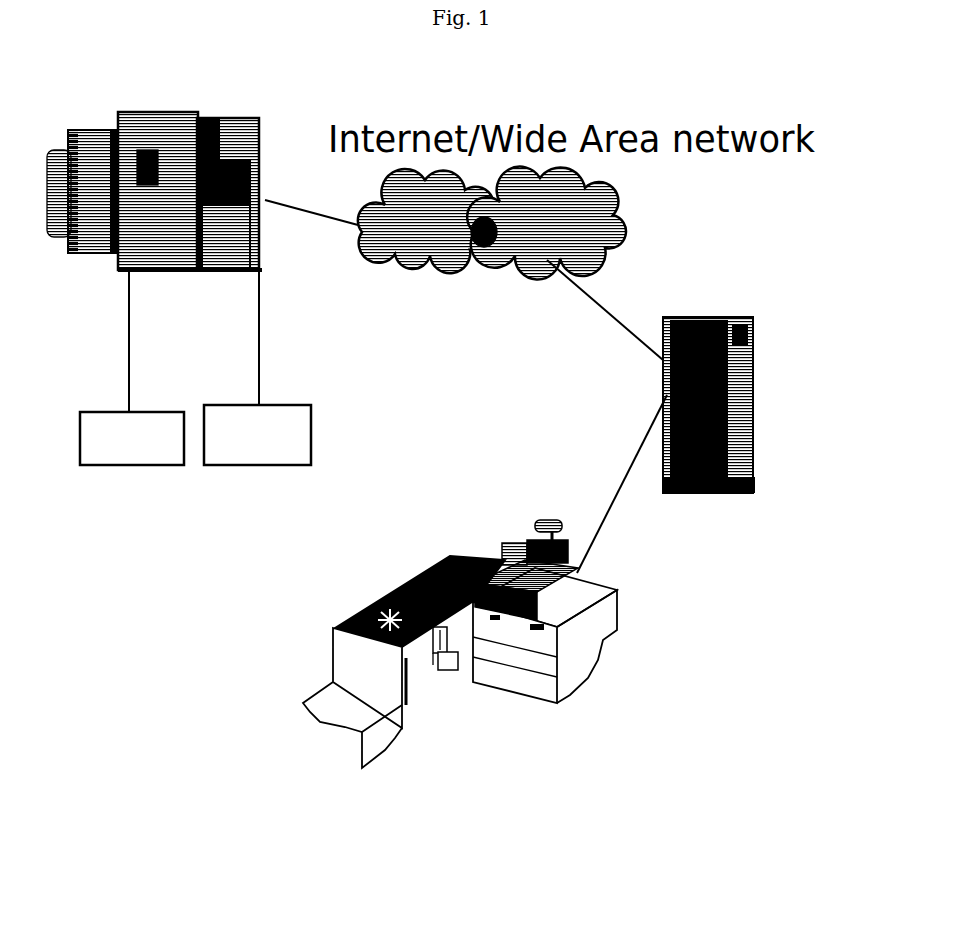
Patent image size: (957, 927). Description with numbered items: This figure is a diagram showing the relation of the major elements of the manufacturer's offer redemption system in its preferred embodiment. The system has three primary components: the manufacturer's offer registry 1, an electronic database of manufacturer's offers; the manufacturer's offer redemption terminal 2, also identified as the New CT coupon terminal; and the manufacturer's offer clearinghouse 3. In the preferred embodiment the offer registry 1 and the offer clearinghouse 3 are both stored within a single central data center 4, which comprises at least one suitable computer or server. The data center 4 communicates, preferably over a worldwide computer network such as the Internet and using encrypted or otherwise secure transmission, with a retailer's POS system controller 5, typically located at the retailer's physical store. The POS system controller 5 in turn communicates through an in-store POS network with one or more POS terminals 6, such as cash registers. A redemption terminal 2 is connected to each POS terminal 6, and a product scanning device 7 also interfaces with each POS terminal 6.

The manufacturer's offer registry 1 is at (98, 467).
The manufacturer's offer redemption terminal 2 is at (442, 670).
The manufacturer's offer clearinghouse 3 is at (295, 470).
The central data center 4 is at (253, 123).
The retailer's POS system controller 5 is at (757, 425).
The POS terminal 6 is at (468, 608).
The product scanning device 7 is at (385, 600).